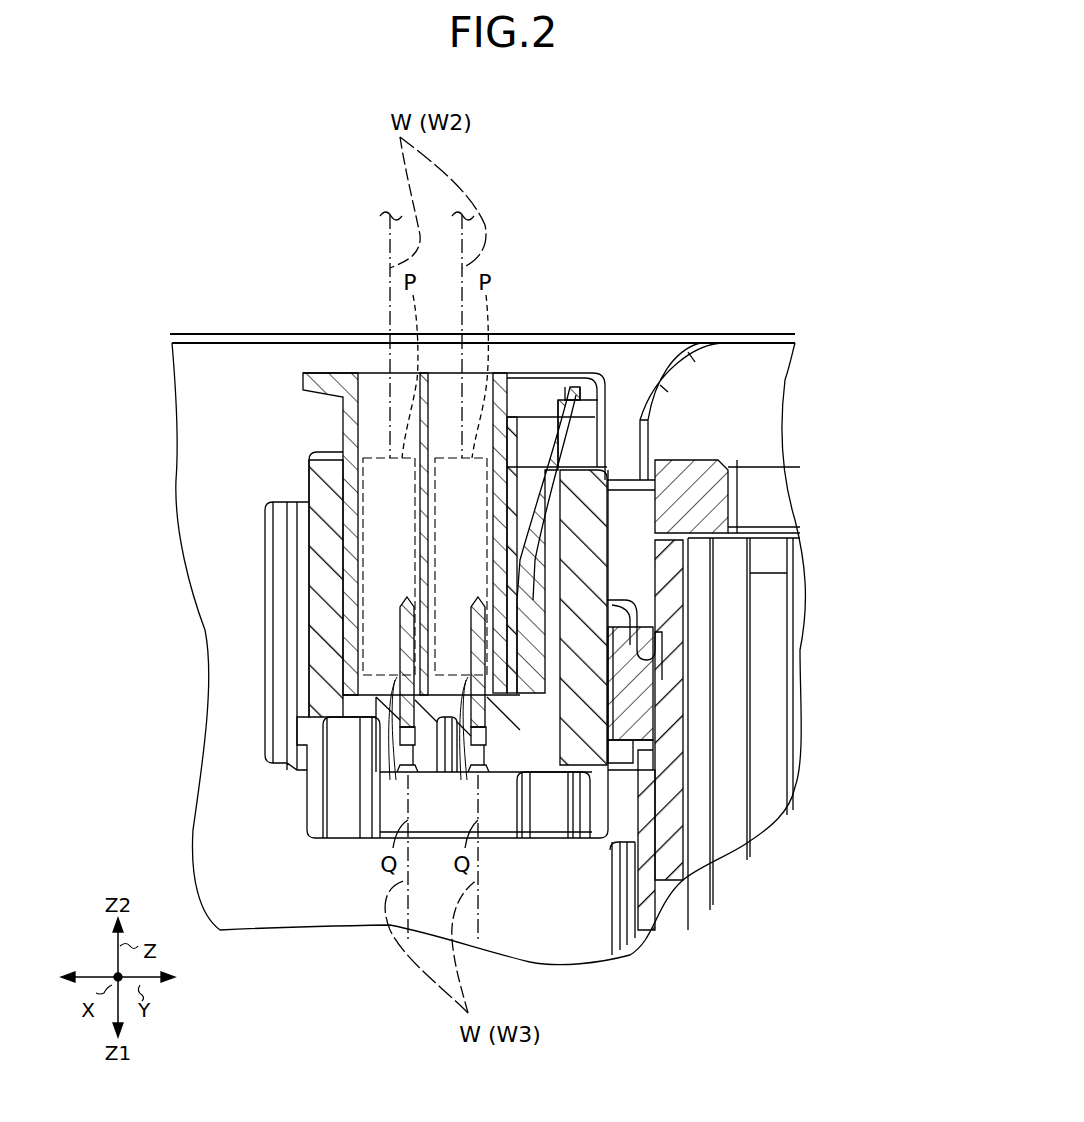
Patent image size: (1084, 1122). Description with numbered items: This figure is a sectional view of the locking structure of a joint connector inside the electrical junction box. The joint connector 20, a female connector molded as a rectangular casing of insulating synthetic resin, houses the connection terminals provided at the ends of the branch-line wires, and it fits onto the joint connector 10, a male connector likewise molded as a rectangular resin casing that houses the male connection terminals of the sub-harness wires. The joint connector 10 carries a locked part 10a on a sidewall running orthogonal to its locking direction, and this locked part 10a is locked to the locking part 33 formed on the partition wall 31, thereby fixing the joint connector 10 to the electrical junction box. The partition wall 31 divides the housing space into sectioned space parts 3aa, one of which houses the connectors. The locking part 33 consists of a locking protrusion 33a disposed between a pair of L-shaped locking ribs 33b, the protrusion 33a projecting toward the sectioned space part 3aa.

The joint connector 10 is at (307, 478).
The locked part 10a is at (652, 647).
The joint connector 20 is at (528, 372).
The partition wall 31 is at (700, 477).
The locking part 33 is at (890, 685).
The locking protrusion 33a is at (653, 652).
The locking ribs 33b is at (623, 755).
The sectioned space part 3aa is at (212, 475).